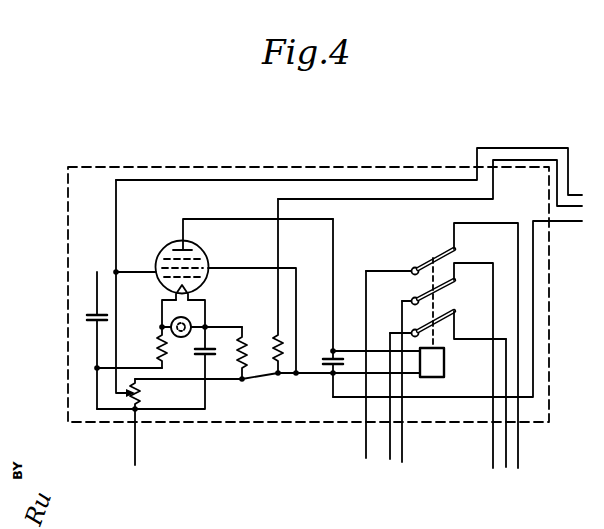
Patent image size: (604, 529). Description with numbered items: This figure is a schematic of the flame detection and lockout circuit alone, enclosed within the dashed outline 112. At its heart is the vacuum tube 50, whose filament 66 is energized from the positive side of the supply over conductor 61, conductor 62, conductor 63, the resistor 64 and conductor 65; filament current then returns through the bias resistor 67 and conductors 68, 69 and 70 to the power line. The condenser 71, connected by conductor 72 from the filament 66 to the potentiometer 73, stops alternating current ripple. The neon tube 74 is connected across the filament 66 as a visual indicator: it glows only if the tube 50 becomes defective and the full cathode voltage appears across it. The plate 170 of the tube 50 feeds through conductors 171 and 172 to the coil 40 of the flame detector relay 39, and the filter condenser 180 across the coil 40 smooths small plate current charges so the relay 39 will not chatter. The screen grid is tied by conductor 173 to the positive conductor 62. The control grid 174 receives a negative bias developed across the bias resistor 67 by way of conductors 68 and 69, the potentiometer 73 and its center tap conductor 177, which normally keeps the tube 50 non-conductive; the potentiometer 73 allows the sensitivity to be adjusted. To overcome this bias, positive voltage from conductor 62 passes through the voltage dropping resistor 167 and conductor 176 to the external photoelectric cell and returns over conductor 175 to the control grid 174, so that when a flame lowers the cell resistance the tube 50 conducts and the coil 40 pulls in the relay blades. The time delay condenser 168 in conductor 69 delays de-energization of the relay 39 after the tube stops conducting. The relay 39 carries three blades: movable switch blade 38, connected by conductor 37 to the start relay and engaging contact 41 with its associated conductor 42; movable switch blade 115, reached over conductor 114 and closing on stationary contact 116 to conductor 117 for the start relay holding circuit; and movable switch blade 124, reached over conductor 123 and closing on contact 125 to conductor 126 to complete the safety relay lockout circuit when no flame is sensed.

The control unit enclosure 112 is at (233, 168).
The conductor 175 is at (361, 178).
The conductor 176 is at (401, 198).
The plate 170 is at (190, 250).
The vacuum tube 50 is at (208, 254).
The control grid 174 is at (130, 268).
The conductor 69 is at (96, 284).
The time delay condenser 168 is at (86, 320).
The conductor 177 is at (110, 351).
The bias resistor 67 is at (158, 341).
The conductor 68 is at (124, 368).
The filament 66 is at (192, 294).
The neon tube 74 is at (182, 338).
The conductor 65 is at (228, 326).
The resistor 64 is at (249, 342).
The condenser 71 is at (216, 352).
The potentiometer 73 is at (142, 390).
The conductor 72 is at (178, 410).
The conductor 70 is at (134, 452).
The conductor 63 is at (257, 381).
The voltage dropping resistor 167 is at (291, 375).
The conductor 62 is at (317, 375).
The conductor 173 is at (301, 277).
The conductor 171 is at (337, 253).
The filter condenser 180 is at (326, 356).
The conductor 172 is at (352, 347).
The flame detector relay 39 is at (425, 249).
The movable switch blade 124 is at (456, 258).
The contact 125 is at (454, 248).
The contact 41 is at (454, 279).
The conductor 42 is at (490, 457).
The movable switch blade 38 is at (446, 296).
The movable switch blade 115 is at (456, 315).
The stationary contact 116 is at (453, 322).
The conductor 117 is at (508, 380).
The coil 40 is at (445, 362).
The conductor 61 is at (570, 222).
The conductor 126 is at (520, 443).
The conductor 123 is at (365, 449).
The conductor 114 is at (389, 460).
The conductor 37 is at (403, 459).